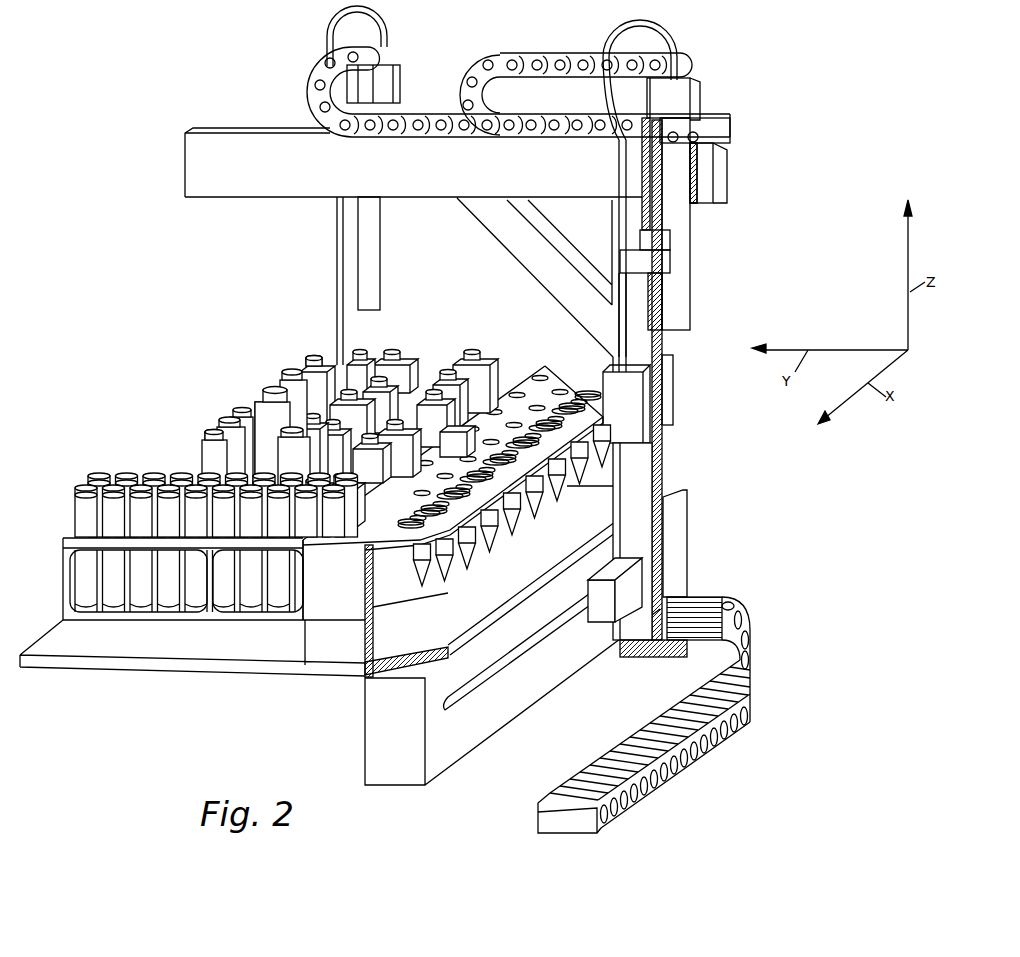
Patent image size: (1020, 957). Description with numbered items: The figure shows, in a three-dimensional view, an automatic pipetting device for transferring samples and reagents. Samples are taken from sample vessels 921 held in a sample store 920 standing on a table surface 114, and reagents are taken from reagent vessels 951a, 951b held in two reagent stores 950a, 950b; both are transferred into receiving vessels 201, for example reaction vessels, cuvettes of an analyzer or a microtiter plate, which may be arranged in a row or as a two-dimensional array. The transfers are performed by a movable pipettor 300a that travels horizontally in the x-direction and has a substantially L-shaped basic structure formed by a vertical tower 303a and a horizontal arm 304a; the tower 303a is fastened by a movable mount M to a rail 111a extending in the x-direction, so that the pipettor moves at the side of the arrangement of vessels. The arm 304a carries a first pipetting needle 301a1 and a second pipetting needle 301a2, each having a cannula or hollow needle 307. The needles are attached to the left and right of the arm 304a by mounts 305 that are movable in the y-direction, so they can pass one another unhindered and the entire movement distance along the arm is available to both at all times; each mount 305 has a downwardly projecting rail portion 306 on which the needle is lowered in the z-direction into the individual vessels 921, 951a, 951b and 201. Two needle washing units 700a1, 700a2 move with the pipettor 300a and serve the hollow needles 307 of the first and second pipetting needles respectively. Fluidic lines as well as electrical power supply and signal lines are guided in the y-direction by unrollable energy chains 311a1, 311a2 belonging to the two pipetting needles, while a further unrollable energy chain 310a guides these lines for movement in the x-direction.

The rail 111a is at (443, 763).
The table surface 114 is at (270, 652).
The receiving vessel 201 is at (568, 382).
The movable pipettor 300a is at (730, 177).
The first pipetting needle 301a1 is at (653, 256).
The second pipetting needle 301a2 is at (383, 88).
The vertical tower 303a is at (657, 462).
The arm 304a is at (213, 172).
The mount 305 is at (690, 160).
The rail portion 306 is at (370, 283).
The hollow needle 307 is at (337, 302).
The energy chain 310a is at (727, 687).
The energy chain 311a1 is at (553, 62).
The energy chain 311a2 is at (322, 98).
The needle washing unit 700a1 is at (642, 430).
The needle washing unit 700a2 is at (673, 380).
The sample store 920 is at (143, 617).
The sample vessel 921 is at (78, 516).
The reagent store 950a is at (210, 425).
The reagent store 950b is at (250, 390).
The reagent vessel 951a is at (207, 458).
The reagent vessel 951b is at (320, 365).
The movable mount M is at (680, 563).